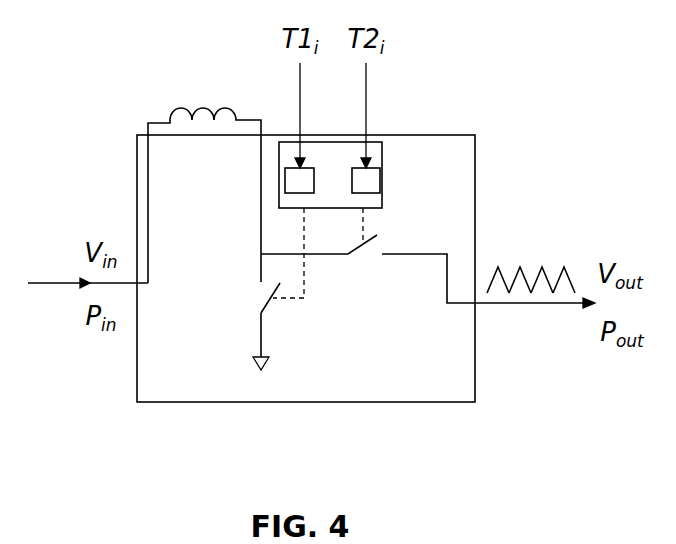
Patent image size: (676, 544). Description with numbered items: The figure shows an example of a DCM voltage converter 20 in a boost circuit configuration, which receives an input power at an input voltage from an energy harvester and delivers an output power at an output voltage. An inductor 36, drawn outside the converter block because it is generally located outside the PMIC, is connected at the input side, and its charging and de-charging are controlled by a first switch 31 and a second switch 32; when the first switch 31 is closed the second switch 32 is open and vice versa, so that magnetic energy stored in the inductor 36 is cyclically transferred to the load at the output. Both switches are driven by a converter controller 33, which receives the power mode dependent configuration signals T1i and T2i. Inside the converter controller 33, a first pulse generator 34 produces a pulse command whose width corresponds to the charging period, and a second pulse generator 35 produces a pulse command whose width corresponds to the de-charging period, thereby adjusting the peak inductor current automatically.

The DCM voltage converter 20 is at (200, 403).
The first switch 31 is at (270, 308).
The second switch 32 is at (380, 242).
The converter controller 33 is at (384, 153).
The first pulse generator 34 is at (285, 182).
The second pulse generator 35 is at (378, 178).
The inductor 36 is at (188, 90).